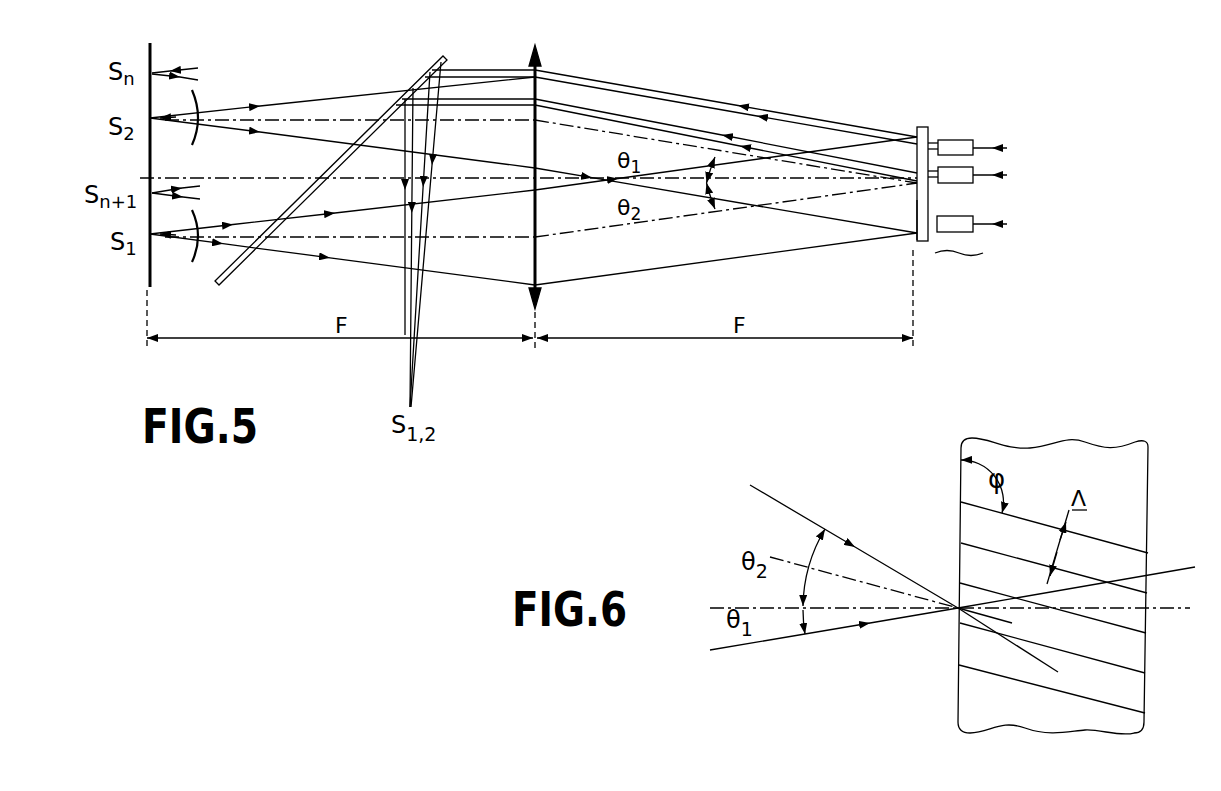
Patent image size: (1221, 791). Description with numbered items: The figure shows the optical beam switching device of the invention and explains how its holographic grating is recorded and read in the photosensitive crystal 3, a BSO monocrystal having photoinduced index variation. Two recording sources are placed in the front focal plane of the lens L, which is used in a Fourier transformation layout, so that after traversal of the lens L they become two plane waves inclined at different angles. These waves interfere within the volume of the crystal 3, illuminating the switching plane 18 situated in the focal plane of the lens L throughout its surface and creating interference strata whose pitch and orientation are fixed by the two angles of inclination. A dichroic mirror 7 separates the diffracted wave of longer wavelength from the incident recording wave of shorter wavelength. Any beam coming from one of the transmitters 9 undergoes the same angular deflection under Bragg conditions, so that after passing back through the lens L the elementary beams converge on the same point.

In FIG. 5, the acousto-optic crystal 3 is at (926, 127).
In FIG. 6, the acousto-optic crystal 3 is at (1137, 478).
In FIG. 5, the dichroic mirror 7 is at (230, 277).
In FIG. 5, the transmitters 9 is at (990, 278).
In FIG. 5, the switching plane 18 is at (913, 213).
In FIG. 5, the lens L is at (538, 85).